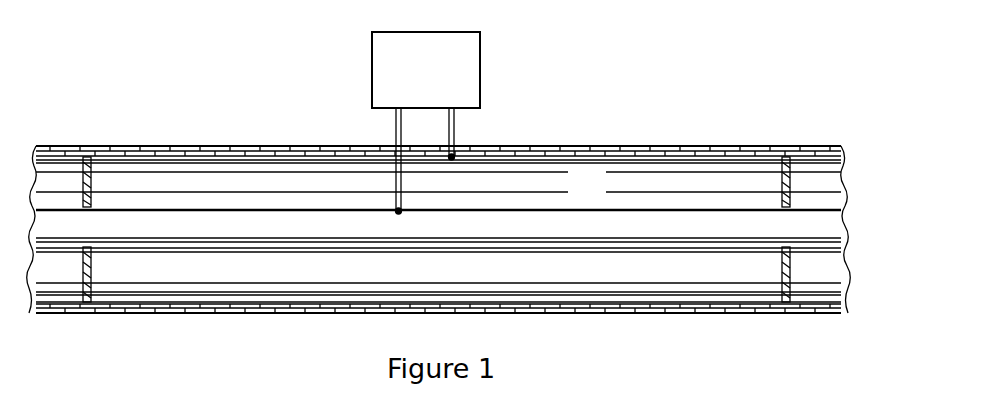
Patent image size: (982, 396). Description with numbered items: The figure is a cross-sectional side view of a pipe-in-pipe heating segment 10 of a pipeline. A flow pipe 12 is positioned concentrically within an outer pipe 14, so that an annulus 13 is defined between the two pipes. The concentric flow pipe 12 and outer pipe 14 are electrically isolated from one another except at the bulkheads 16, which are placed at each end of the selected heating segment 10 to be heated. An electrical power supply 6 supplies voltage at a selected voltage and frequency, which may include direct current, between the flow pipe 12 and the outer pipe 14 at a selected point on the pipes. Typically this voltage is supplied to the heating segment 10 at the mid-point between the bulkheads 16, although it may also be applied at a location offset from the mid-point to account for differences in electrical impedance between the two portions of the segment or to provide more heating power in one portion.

The pipe-in-pipe heating segment 10 is at (287, 105).
The electrical power supply 6 is at (480, 56).
The outer pipe 14 is at (633, 148).
The flow pipe 12 is at (818, 208).
The annulus 13 is at (600, 198).
The bulkheads 16 is at (86, 178).